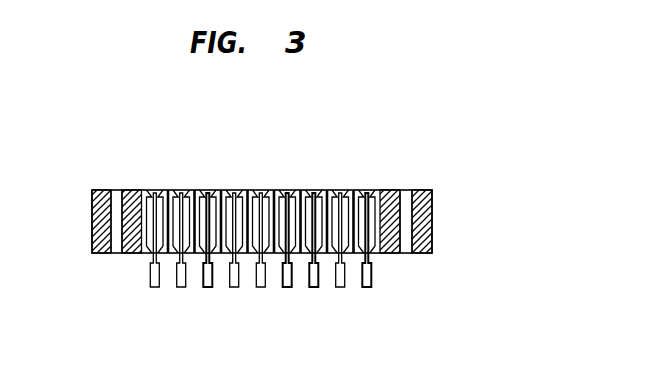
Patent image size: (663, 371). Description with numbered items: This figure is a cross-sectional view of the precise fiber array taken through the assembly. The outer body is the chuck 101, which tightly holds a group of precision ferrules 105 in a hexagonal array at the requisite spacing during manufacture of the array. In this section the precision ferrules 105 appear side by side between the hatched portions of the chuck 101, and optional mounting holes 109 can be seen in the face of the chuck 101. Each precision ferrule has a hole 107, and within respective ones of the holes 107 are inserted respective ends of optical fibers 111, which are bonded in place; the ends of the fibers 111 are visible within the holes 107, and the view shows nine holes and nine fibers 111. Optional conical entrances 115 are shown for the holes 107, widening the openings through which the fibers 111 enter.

The chuck 101 is at (92, 213).
The precision ferrules 105 is at (165, 189).
The holes 107 is at (205, 189).
The mounting holes 109 is at (117, 189).
The optical fibers 111 is at (287, 288).
The conical entrances 115 is at (176, 271).